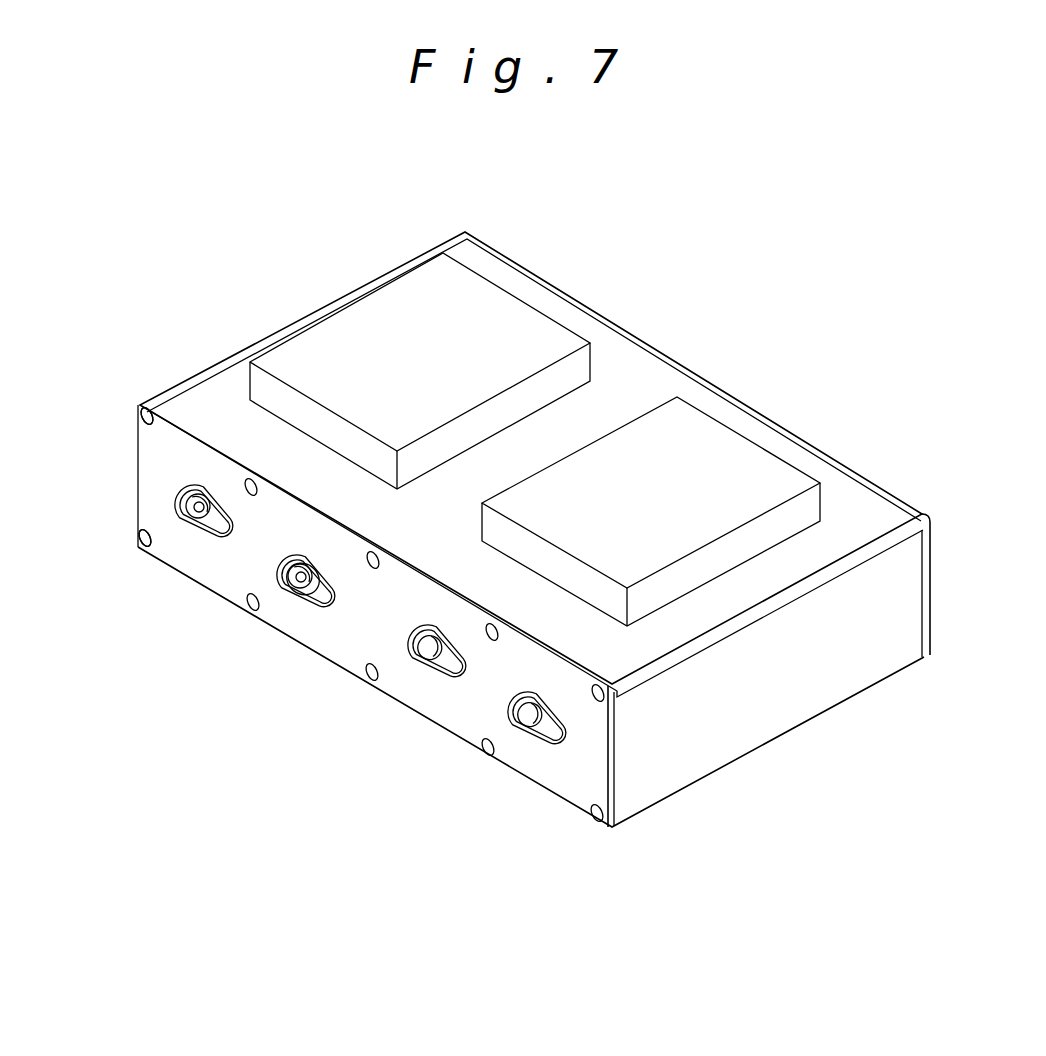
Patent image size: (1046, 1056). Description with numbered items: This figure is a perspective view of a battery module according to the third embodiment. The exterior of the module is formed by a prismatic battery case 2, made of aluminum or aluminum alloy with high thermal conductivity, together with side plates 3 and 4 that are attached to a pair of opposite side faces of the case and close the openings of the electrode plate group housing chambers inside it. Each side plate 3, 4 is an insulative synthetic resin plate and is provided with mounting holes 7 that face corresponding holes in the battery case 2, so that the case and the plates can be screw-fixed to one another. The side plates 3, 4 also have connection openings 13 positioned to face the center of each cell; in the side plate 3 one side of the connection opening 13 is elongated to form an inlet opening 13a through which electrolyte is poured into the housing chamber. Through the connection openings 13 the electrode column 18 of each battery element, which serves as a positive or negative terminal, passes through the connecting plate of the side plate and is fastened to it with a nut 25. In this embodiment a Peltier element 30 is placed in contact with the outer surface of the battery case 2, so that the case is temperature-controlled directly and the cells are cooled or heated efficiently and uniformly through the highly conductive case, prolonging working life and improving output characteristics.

The battery case 2 is at (712, 738).
The side plate 3 is at (568, 783).
The side plate 4 is at (867, 478).
The mounting holes 7 is at (140, 418).
The connection opening 13 is at (176, 510).
The inlet opening 13a is at (277, 565).
The electrode column 18 is at (188, 528).
The nut 25 is at (313, 607).
The Peltier element 30 is at (480, 338).